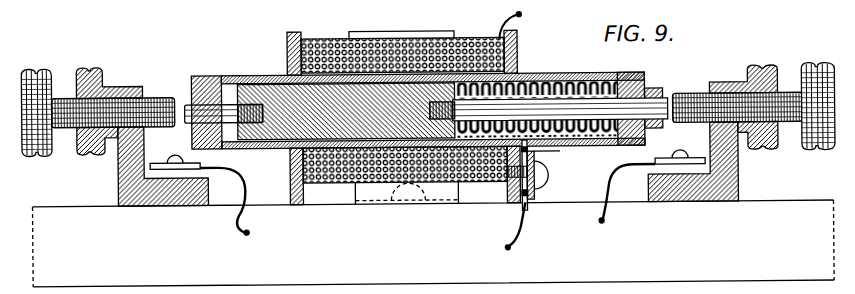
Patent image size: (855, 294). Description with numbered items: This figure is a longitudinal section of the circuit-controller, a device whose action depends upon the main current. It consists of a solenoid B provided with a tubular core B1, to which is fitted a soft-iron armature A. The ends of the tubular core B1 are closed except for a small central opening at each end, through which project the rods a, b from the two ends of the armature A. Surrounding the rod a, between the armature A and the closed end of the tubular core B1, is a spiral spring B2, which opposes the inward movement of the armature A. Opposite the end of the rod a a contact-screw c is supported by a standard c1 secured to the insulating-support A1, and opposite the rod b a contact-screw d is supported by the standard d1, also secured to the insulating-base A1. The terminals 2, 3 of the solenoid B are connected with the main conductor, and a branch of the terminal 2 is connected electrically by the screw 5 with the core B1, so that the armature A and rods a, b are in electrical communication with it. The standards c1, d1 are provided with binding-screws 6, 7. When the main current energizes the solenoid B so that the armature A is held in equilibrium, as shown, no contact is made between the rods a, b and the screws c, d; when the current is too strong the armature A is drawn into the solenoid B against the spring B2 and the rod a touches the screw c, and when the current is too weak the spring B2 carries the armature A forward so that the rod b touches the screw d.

The soft-iron armature A is at (345, 111).
The insulating-support A1 is at (433, 243).
The solenoid B is at (387, 107).
The tubular core B1 is at (196, 78).
The spiral spring B2 is at (567, 147).
The terminal of the solenoid 2 is at (517, 22).
The terminal of the solenoid 3 is at (289, 70).
The screw 5 is at (549, 176).
The binding-screw 6 is at (684, 153).
The binding-screw 7 is at (171, 151).
The rod a is at (667, 92).
The rod b is at (188, 101).
The contact-screw c is at (689, 95).
The standard c1 is at (736, 185).
The contact-screw d is at (161, 96).
The standard d1 is at (134, 164).